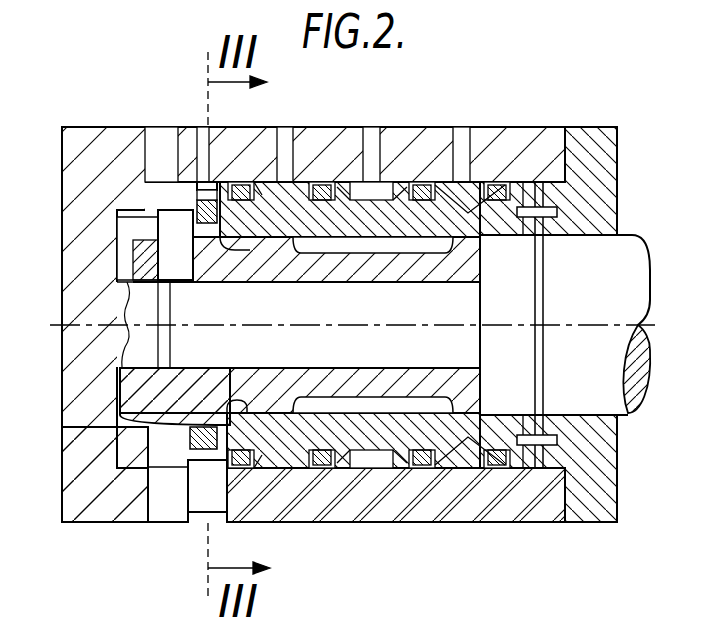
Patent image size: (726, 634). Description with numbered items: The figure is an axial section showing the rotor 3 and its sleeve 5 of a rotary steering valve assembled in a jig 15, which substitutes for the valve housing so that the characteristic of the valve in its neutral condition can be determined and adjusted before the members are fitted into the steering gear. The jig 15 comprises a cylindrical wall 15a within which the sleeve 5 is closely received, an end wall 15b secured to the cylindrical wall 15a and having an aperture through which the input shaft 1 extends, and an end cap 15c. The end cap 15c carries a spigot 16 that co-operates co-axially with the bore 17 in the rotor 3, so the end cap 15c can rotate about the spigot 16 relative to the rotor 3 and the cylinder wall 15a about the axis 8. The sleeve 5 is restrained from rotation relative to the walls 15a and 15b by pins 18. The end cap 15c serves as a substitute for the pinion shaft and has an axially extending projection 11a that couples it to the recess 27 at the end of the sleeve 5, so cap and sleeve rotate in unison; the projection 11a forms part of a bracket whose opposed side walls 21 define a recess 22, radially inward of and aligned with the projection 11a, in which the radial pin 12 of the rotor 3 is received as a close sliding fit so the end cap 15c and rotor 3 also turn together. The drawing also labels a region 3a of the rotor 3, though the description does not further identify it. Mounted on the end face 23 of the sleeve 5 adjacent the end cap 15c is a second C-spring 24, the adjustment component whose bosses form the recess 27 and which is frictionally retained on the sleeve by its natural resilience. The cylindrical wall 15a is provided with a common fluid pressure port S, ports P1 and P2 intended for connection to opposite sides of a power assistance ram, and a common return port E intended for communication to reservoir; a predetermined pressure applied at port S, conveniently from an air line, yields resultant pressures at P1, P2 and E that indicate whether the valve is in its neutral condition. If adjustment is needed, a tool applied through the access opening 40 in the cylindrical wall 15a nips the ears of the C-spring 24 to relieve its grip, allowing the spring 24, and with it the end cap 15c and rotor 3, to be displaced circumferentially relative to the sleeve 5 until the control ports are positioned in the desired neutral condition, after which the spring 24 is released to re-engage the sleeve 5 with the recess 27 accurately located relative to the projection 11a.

The input shaft 1 is at (597, 308).
The rotor 3 is at (285, 382).
The spool recess 3a is at (327, 242).
The sleeve 5 is at (445, 440).
The axis 8 is at (418, 330).
The axially extending projection 11a is at (214, 188).
The radial pin 12 is at (165, 240).
The jig 15 is at (434, 527).
The cylindrical wall 15a is at (303, 500).
The end wall 15b is at (598, 492).
The end cap 15c is at (115, 505).
The spigot 16 is at (140, 305).
The bore 17 is at (273, 285).
The pins 18 is at (541, 200).
The opposed side walls 21 is at (215, 265).
The recess 22 is at (197, 207).
The end face 23 is at (215, 440).
The second C-spring 24 is at (228, 250).
The recess 27 is at (213, 188).
The access opening 40 is at (203, 492).
The common return port E is at (188, 60).
The common fluid pressure port S is at (373, 58).
The port P1 is at (463, 182).
The port P2 is at (290, 182).